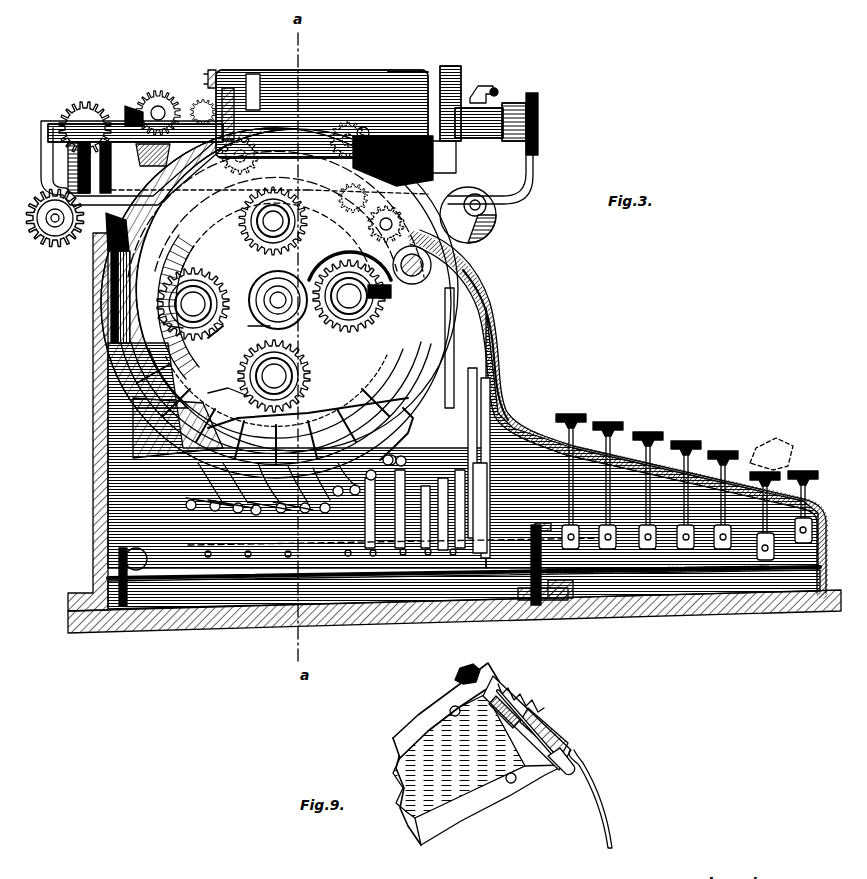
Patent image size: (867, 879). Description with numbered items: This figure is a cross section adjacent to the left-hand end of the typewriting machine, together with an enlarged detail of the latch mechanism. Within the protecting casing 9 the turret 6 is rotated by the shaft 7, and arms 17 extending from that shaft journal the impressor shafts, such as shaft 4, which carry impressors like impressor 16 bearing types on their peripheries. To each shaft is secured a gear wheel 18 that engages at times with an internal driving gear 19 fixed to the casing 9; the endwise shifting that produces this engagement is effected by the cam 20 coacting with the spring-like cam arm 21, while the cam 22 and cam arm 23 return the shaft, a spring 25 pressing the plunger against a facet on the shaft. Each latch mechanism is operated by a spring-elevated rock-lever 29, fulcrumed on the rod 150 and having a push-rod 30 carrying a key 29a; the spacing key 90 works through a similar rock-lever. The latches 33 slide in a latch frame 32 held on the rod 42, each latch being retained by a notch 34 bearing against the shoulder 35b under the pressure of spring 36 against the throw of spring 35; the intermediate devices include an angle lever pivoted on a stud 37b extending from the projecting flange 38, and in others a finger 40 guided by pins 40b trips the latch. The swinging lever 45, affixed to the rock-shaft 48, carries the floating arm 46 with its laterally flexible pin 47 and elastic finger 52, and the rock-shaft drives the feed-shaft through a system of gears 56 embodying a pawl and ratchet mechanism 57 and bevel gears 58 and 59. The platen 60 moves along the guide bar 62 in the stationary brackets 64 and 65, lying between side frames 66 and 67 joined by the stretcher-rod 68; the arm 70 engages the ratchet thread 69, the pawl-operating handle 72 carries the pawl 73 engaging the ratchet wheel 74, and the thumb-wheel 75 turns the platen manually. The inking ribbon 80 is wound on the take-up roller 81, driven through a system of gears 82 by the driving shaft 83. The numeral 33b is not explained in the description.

In FIG. 3, the shaft 4 is at (274, 299).
In FIG. 3, the turret 6 is at (250, 312).
In FIG. 3, the shaft 7 is at (278, 300).
In FIG. 3, the protecting casing 9 is at (88, 440).
In FIG. 3, the impressor 16 is at (285, 318).
In FIG. 3, the arm 17 is at (205, 325).
In FIG. 3, the gear wheel 18 is at (262, 268).
In FIG. 3, the internal driving gear 19 is at (205, 385).
In FIG. 3, the cam 20 is at (205, 418).
In FIG. 3, the cam arm 21 is at (305, 180).
In FIG. 3, the cam 22 is at (175, 355).
In FIG. 3, the cam arm 23 is at (235, 185).
In FIG. 3, the spring 25 is at (160, 312).
In FIG. 3, the rock-lever 29 is at (650, 575).
In FIG. 3, the key 29a is at (722, 440).
In FIG. 3, the push-rod 30 is at (600, 435).
In FIG. 3, the latch 33 is at (400, 385).
In FIG. 9, the latch 33 is at (449, 666).
In FIG. 3, the segment arc 33b is at (325, 422).
In FIG. 3, the notch 34 is at (402, 422).
In FIG. 9, the notch 34 is at (538, 712).
In FIG. 9, the spring 35 is at (543, 752).
In FIG. 9, the shoulder 35b is at (567, 746).
In FIG. 9, the spring 36 is at (515, 690).
In FIG. 3, the stud 37b is at (395, 540).
In FIG. 3, the projecting flange 38 is at (335, 545).
In FIG. 3, the finger 40 is at (497, 400).
In FIG. 9, the finger 40 is at (596, 800).
In FIG. 3, the pin 40b is at (485, 362).
In FIG. 3, the rod 42 is at (460, 252).
In FIG. 3, the swinging lever 45 is at (362, 222).
In FIG. 3, the floating arm 46 is at (410, 238).
In FIG. 3, the pin 47 is at (315, 250).
In FIG. 3, the rock-shaft 48 is at (358, 122).
In FIG. 3, the elastic finger 52 is at (437, 195).
In FIG. 3, the system of gears 56 is at (300, 125).
In FIG. 3, the pawl and ratchet mechanism 57 is at (470, 185).
In FIG. 3, the bevel gear 58 is at (150, 96).
In FIG. 3, the bevel gear 59 is at (122, 101).
In FIG. 3, the rotary cylinder platen 60 is at (362, 58).
In FIG. 3, the guide bar 62 is at (490, 102).
In FIG. 3, the stationary bracket 64 is at (38, 165).
In FIG. 3, the stationary bracket 65 is at (512, 167).
In FIG. 3, the side frame 66 is at (214, 70).
In FIG. 3, the side frame 67 is at (441, 60).
In FIG. 3, the stretcher-rod 68 is at (392, 66).
In FIG. 3, the ratchet thread 69 is at (450, 158).
In FIG. 3, the arm 70 is at (470, 80).
In FIG. 3, the pawl-operating handle 72 is at (205, 100).
In FIG. 3, the spring-pressed pawl 73 is at (248, 70).
In FIG. 3, the ratchet wheel 74 is at (240, 146).
In FIG. 3, the thumb-wheel 75 is at (528, 130).
In FIG. 3, the inking ribbon 80 is at (115, 212).
In FIG. 3, the take-up roller 81 is at (48, 222).
In FIG. 3, the system of gears 82 is at (75, 106).
In FIG. 3, the driving shaft 83 is at (38, 232).
In FIG. 3, the spacing key 90 is at (798, 463).
In FIG. 3, the rod 150 is at (118, 552).
In FIG. 9, the latch frame 32 is at (498, 790).